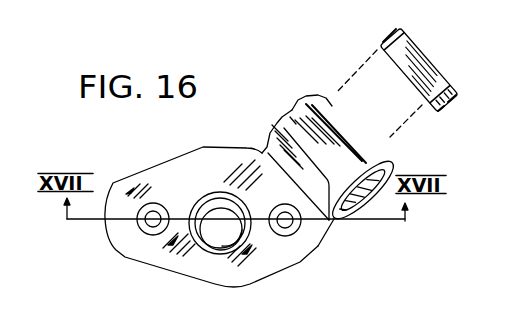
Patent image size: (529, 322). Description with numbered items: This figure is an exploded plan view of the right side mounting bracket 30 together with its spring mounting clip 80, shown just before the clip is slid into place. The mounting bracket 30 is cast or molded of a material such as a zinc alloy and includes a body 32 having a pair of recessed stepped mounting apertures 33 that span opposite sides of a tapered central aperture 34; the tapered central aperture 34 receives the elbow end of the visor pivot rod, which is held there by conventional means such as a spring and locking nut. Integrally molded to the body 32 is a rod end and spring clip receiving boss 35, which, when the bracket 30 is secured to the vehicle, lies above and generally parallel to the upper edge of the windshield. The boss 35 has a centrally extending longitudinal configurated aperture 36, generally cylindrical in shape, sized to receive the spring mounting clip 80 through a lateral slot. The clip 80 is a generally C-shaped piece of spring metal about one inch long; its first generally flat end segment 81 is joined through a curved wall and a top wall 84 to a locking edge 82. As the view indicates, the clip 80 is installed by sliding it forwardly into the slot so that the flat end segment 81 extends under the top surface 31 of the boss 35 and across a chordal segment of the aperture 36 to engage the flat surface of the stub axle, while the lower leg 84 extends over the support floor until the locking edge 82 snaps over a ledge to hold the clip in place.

The mounting bracket 30 is at (188, 144).
The top surface of boss 31 is at (332, 160).
The body 32 is at (187, 259).
The recessed stepped mounting apertures 33 is at (125, 256).
The tapered central aperture 34 is at (243, 231).
The rod end and spring clip receiving boss 35 is at (290, 112).
The longitudinal configurated aperture 36 is at (361, 192).
The spring mounting clip 80 is at (447, 35).
The first generally flat end segment 81 is at (392, 38).
The locking edge 82 is at (436, 114).
The top wall 84 is at (455, 101).